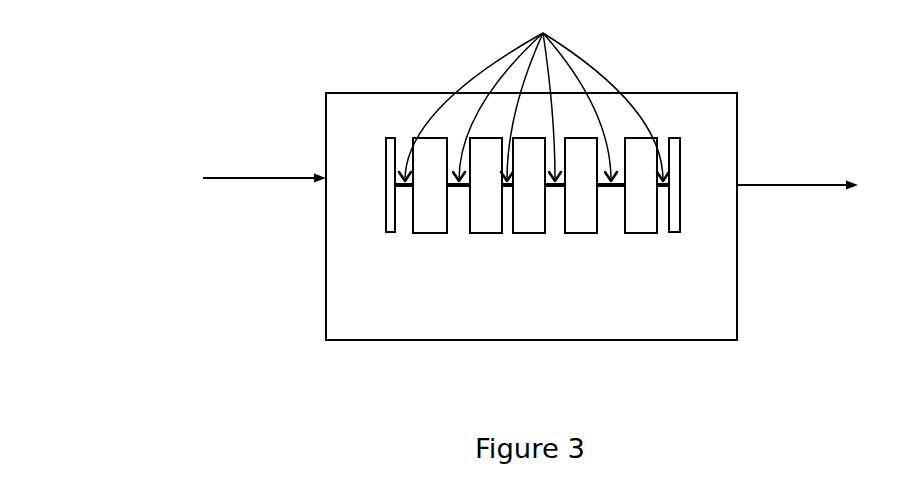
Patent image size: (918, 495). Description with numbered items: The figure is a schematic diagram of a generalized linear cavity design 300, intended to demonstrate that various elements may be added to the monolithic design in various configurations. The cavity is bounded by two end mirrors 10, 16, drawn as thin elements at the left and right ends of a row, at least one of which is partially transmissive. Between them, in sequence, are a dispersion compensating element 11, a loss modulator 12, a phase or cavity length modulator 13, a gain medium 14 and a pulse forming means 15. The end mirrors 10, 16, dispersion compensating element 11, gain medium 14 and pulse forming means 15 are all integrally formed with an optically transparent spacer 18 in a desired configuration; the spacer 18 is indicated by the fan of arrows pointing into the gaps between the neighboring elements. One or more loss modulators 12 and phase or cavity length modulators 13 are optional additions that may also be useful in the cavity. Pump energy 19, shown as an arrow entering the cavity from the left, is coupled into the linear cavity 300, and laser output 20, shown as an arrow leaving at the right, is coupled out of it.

The generalized linear cavity design 300 is at (742, 43).
The end mirror 10 is at (390, 232).
The dispersion compensating element 11 is at (427, 233).
The loss modulator 12 is at (482, 233).
The phase or cavity length modulator 13 is at (529, 233).
The gain medium 14 is at (578, 233).
The pulse forming means 15 is at (640, 233).
The end mirror 16 is at (672, 232).
The optically transparent spacer 18 is at (534, 90).
The pump energy 19 is at (264, 159).
The laser output 20 is at (797, 167).